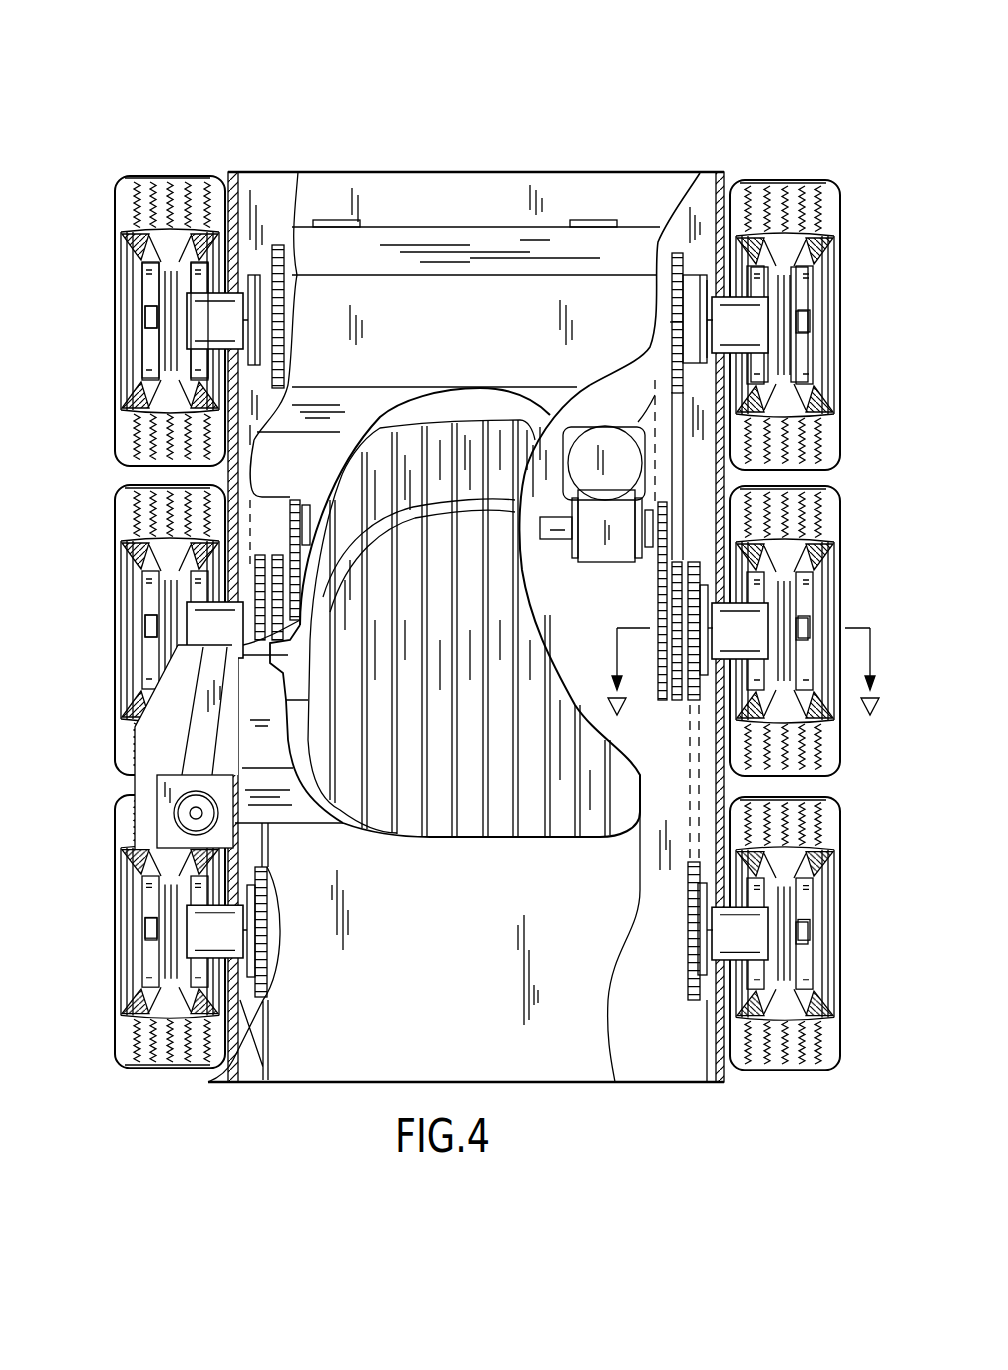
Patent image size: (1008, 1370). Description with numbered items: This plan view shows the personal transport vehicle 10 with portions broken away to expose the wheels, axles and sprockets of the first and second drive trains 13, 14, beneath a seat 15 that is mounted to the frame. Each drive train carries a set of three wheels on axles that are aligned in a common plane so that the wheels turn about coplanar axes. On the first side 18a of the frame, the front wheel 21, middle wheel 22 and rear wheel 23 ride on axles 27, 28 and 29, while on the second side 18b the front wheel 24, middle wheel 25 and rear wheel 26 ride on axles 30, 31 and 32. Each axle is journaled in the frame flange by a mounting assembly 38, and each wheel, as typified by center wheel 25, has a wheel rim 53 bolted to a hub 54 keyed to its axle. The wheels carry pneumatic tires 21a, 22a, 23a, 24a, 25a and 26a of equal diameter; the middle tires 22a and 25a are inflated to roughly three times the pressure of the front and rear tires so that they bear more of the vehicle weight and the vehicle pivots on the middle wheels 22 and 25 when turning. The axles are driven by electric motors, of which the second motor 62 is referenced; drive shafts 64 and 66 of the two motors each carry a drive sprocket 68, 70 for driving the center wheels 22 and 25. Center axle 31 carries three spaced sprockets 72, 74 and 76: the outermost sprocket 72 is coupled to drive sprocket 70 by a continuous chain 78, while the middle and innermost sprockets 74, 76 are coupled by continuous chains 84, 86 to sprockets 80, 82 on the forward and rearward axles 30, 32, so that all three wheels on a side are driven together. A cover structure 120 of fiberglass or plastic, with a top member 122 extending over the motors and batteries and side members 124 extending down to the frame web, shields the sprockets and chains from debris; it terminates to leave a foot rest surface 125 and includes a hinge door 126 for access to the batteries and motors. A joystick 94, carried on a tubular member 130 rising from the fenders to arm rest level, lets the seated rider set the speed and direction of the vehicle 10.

The personal transport vehicle 10 is at (556, 72).
The first drive train 13 is at (214, 114).
The second drive train 14 is at (752, 1118).
The seat 15 is at (472, 390).
The first side of frame 18a is at (240, 1085).
The second side of frame 18b is at (712, 1085).
The front wheel 21 is at (140, 1082).
The pneumatic tire 21a is at (167, 1078).
The middle wheel 22 is at (126, 692).
The pneumatic tire 22a is at (152, 625).
The rear wheel 23 is at (151, 162).
The pneumatic tire 23a is at (142, 165).
The front wheel 24 is at (818, 1082).
The pneumatic tire 24a is at (795, 798).
The middle wheel 25 is at (838, 483).
The pneumatic tire 25a is at (838, 548).
The rear wheel 26 is at (816, 165).
The pneumatic tire 26a is at (830, 195).
The axle 27 is at (150, 930).
The axle 28 is at (152, 636).
The axle 29 is at (148, 318).
The axle 30 is at (810, 932).
The center axle 31 is at (810, 630).
The axle 32 is at (810, 322).
The mounting assembly 38 is at (274, 178).
The wheel rim 53 is at (150, 252).
The hub 54 is at (165, 332).
The second motor 62 is at (626, 398).
The drive shaft 64 is at (310, 500).
The drive shaft 66 is at (645, 566).
The drive sprocket 68 is at (290, 495).
The drive sprocket 70 is at (630, 420).
The outermost sprocket 72 is at (658, 702).
The middle sprocket 74 is at (677, 705).
The innermost sprocket 76 is at (694, 560).
The continuous chain 78 is at (660, 612).
The sprocket 80 is at (688, 945).
The sprocket 82 is at (708, 235).
The continuous chain 84 is at (690, 882).
The continuous chain 86 is at (676, 325).
The joystick 94 is at (175, 814).
The cover structure 120 is at (372, 176).
The top member 122 is at (376, 300).
The side members 124 is at (322, 175).
The foot rest surface 125 is at (453, 971).
The hinge door 126 is at (592, 185).
The tubular member 130 is at (192, 756).